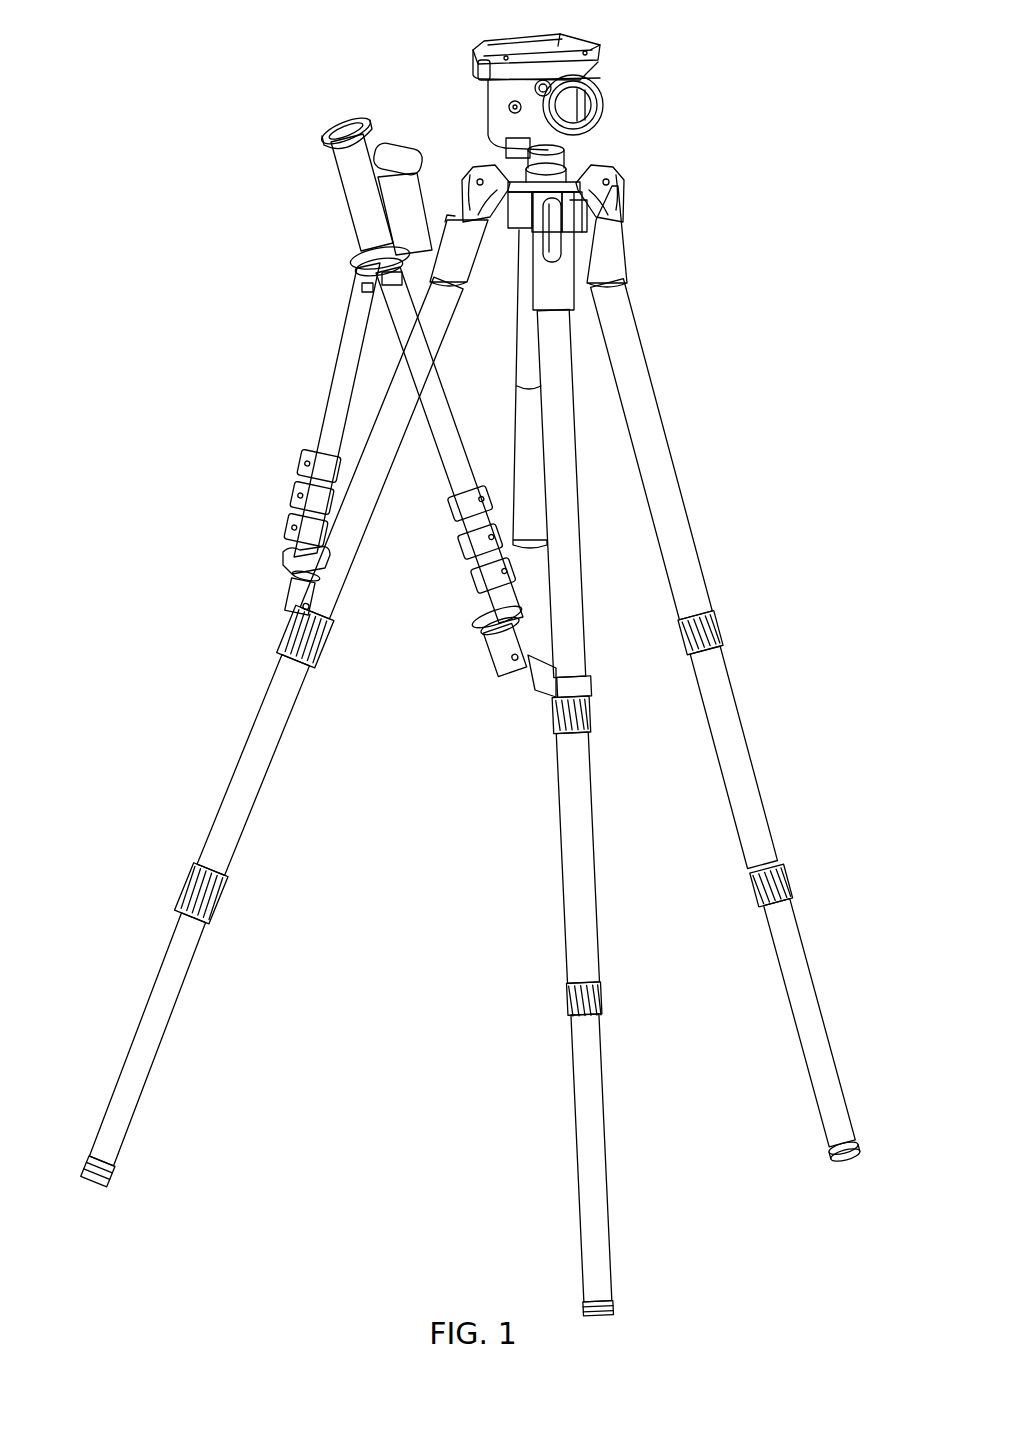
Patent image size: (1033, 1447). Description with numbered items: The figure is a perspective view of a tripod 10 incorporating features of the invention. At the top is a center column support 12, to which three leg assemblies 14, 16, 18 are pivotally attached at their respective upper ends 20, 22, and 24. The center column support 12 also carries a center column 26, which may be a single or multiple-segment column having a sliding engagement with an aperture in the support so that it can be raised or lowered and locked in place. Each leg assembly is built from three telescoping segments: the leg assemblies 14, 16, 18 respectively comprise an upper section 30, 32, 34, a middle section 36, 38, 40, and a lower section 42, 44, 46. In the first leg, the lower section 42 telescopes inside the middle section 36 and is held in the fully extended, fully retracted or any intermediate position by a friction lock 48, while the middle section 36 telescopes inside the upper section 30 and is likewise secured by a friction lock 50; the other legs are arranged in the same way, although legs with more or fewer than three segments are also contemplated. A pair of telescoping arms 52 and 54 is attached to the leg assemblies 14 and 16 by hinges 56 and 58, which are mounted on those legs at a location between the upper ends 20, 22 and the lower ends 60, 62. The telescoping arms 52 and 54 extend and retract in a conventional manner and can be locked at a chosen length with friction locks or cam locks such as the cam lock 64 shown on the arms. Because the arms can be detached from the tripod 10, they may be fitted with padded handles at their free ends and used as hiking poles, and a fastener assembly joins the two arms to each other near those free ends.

The tripod 10 is at (750, 70).
The center column support 12 is at (578, 136).
The leg assembly 14 is at (271, 747).
The leg assembly 16 is at (578, 768).
The leg assembly 18 is at (728, 675).
The upper end 20 is at (470, 176).
The upper end 22 is at (557, 236).
The upper end 24 is at (578, 178).
The center column 26 is at (528, 462).
The upper section 30 is at (368, 495).
The upper section 32 is at (568, 549).
The upper section 34 is at (697, 597).
The middle section 36 is at (240, 768).
The middle section 38 is at (563, 762).
The middle section 40 is at (708, 693).
The lower section 42 is at (140, 1030).
The lower section 44 is at (585, 1145).
The lower section 46 is at (800, 1033).
The friction lock 48 is at (223, 895).
The friction lock 50 is at (285, 616).
The telescoping arm 52 is at (340, 357).
The telescoping arm 54 is at (425, 377).
The hinge 56 is at (330, 590).
The hinge 58 is at (535, 660).
The lower end 60 is at (95, 1172).
The lower end 62 is at (600, 1320).
The cam lock 64 is at (302, 461).